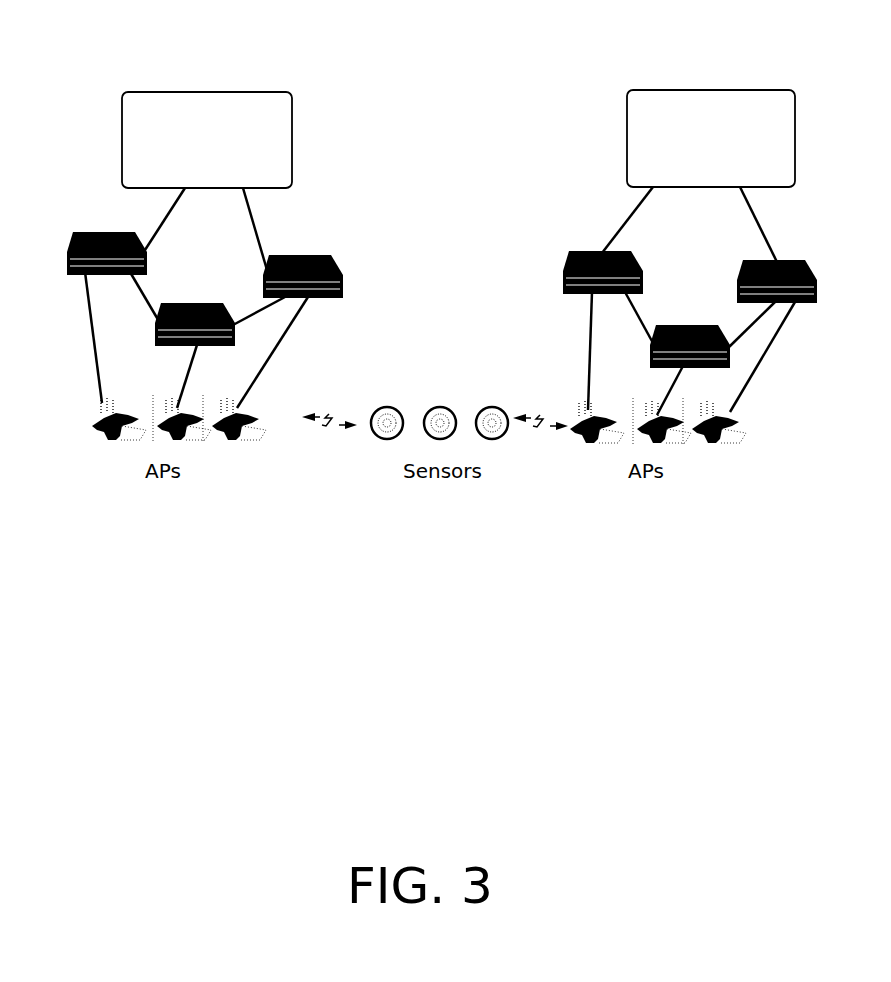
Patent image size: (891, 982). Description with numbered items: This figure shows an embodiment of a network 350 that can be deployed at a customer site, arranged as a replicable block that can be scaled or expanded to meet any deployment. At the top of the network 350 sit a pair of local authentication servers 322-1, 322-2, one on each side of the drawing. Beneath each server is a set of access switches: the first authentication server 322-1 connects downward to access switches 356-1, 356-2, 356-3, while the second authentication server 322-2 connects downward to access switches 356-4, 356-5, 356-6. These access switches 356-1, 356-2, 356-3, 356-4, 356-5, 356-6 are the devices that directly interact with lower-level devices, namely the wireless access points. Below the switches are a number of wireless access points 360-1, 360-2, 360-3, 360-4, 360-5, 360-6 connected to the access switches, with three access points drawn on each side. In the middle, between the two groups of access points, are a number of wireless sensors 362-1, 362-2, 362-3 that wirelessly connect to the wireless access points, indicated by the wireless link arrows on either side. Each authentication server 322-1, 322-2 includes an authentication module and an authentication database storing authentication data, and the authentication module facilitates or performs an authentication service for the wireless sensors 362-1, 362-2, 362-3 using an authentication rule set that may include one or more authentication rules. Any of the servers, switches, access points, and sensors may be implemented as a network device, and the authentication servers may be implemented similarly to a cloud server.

The network 350 is at (462, 31).
The local authentication server 322-1 is at (207, 140).
The local authentication server 322-2 is at (711, 138).
The access switch 356-1 is at (80, 232).
The access switch 356-2 is at (160, 332).
The access switch 356-3 is at (342, 272).
The access switch 356-4 is at (566, 270).
The access switch 356-5 is at (650, 358).
The access switch 356-6 is at (812, 275).
The wireless access point 360-1 is at (86, 420).
The wireless access point 360-2 is at (152, 418).
The wireless access point 360-3 is at (272, 409).
The wireless access point 360-4 is at (577, 427).
The wireless access point 360-5 is at (634, 412).
The wireless access point 360-6 is at (733, 430).
The wireless sensor 362-1 is at (383, 408).
The wireless sensor 362-2 is at (441, 407).
The wireless sensor 362-3 is at (496, 408).